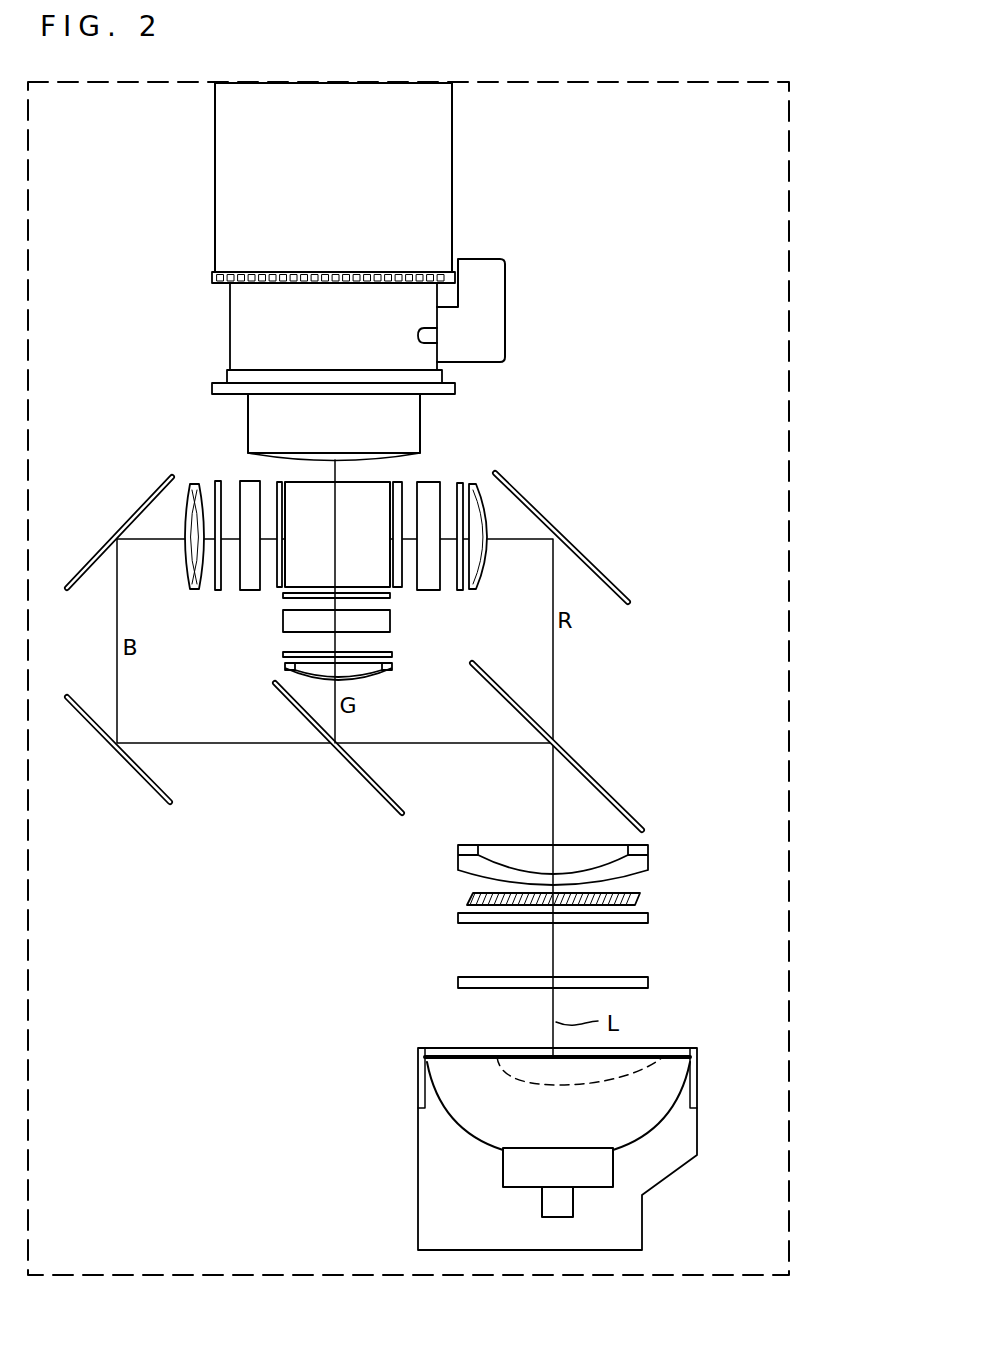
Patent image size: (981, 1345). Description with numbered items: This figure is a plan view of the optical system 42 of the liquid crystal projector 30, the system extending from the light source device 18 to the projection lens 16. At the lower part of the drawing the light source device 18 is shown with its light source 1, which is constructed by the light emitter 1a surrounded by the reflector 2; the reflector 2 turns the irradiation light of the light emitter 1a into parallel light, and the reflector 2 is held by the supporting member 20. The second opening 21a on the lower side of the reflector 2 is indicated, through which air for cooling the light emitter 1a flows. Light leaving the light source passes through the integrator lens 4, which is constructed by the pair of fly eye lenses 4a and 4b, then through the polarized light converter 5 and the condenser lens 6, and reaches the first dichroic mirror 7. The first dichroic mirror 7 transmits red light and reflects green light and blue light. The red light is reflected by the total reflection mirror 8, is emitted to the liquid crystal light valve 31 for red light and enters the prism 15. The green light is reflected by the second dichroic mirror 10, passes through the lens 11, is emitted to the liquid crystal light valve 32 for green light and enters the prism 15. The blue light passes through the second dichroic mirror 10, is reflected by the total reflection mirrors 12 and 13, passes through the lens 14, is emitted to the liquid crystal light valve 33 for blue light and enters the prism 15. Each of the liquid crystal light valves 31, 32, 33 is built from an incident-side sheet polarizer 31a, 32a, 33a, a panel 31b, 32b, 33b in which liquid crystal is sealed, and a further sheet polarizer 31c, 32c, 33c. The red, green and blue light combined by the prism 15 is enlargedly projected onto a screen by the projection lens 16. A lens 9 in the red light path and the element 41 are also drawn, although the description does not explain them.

The light source 1 is at (546, 1106).
The light emitter 1a is at (548, 1205).
The reflector 2 is at (620, 1100).
The integrator lens 4 is at (509, 952).
The fly eye lens 4a is at (527, 982).
The fly eye lens 4b is at (458, 916).
The polarized light converter 5 is at (645, 898).
The condenser lens 6 is at (458, 862).
The first dichroic mirror 7 is at (600, 790).
The total reflection mirror 8 is at (592, 562).
The field lens 9 is at (473, 482).
The second dichroic mirror 10 is at (365, 780).
The lens 11 is at (393, 668).
The total reflection mirror 12 is at (140, 777).
The total reflection mirror 13 is at (135, 512).
The lens 14 is at (178, 481).
The prism 15 is at (392, 590).
The projection lens 16 is at (442, 187).
The light source device 18 is at (522, 1123).
The supporting member 20 is at (428, 1140).
The second opening 21a is at (671, 1046).
The liquid crystal projector 30 is at (705, 70).
The liquid crystal light valve for red light 31 is at (460, 488).
The incident-side sheet polarizer 31a is at (492, 510).
The panel 31b is at (428, 485).
The sheet polarizer 31c is at (402, 483).
The liquid crystal light valve for green light 32 is at (290, 623).
The incident-side sheet polarizer 32a is at (311, 643).
The panel 32b is at (290, 622).
The sheet polarizer 32c is at (283, 596).
The liquid crystal light valve for blue light 33 is at (211, 489).
The incident-side sheet polarizer 33a is at (215, 482).
The panel 33b is at (250, 487).
The sheet polarizer 33c is at (248, 509).
The optical unit housing 41 is at (790, 259).
The optical system 42 is at (594, 364).